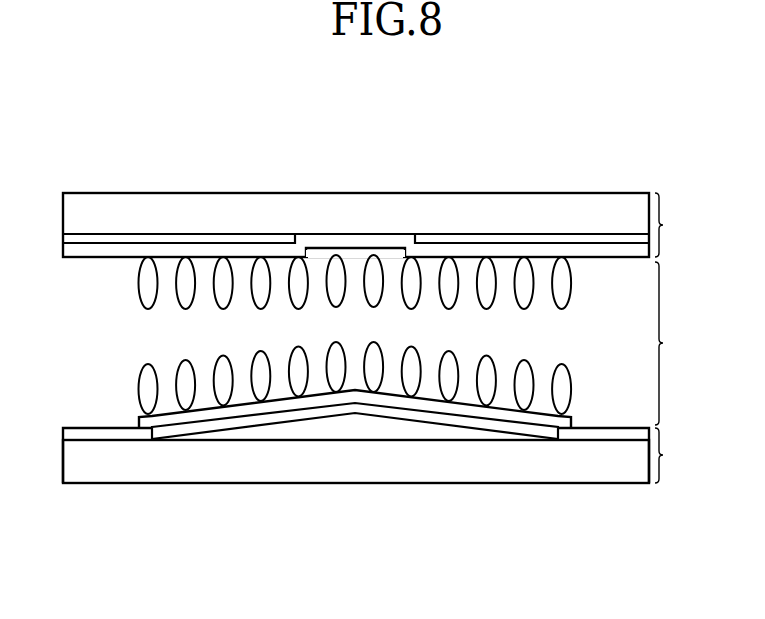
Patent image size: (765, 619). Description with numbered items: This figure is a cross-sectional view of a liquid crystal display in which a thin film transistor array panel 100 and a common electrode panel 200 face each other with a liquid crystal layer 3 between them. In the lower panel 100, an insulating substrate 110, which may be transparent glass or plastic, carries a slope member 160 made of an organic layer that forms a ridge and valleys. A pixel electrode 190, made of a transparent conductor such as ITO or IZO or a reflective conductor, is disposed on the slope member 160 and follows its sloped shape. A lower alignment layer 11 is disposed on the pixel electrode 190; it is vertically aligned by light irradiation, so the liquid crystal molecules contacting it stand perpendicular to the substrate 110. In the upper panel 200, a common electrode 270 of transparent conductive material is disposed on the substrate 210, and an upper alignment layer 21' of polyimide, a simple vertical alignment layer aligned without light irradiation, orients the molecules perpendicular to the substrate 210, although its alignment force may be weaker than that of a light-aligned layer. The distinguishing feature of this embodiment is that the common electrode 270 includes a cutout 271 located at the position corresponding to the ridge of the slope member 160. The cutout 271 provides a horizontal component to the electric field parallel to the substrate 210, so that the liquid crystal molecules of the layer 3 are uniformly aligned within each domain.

The liquid crystal layer 3 is at (410, 340).
The lower alignment layer 11 is at (608, 432).
The upper alignment layer 21' is at (532, 277).
The thin film transistor array panel 100 is at (681, 455).
The insulating substrate 110 is at (442, 460).
The slope member 160 is at (356, 427).
The pixel electrode 190 is at (290, 417).
The common electrode panel 200 is at (682, 225).
The substrate 210 is at (479, 215).
The common electrode 270 is at (174, 241).
The cutout 271 is at (356, 232).